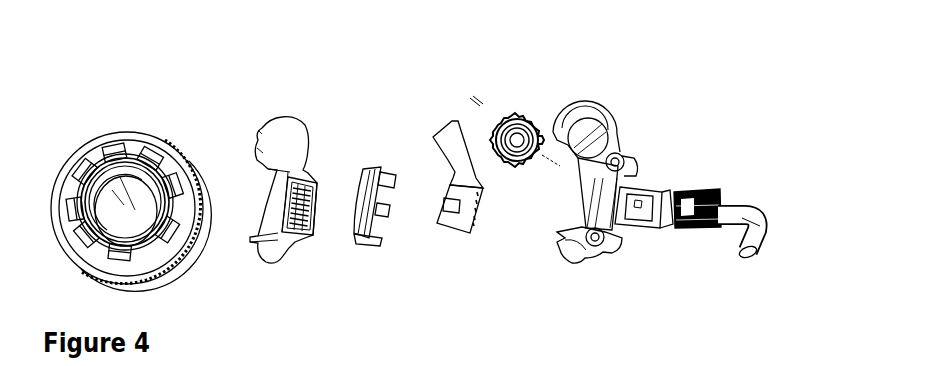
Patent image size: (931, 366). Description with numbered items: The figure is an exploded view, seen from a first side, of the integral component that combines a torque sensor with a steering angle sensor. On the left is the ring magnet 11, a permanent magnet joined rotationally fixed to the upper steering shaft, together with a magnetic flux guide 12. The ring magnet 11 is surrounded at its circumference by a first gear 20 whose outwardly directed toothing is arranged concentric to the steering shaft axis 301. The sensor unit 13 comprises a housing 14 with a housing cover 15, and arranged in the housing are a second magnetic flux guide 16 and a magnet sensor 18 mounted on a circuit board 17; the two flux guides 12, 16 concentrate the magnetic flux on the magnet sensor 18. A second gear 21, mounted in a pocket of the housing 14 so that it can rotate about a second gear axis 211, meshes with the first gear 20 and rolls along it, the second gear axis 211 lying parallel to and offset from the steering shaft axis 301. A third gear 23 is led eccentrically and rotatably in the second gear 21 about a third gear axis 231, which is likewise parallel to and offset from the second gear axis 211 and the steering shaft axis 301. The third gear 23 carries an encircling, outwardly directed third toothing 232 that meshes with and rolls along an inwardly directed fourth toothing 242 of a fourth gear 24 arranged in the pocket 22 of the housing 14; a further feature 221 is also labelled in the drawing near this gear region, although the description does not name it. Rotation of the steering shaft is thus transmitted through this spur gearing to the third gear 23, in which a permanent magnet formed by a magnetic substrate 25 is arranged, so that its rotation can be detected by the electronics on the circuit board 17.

The ring magnet 11 is at (125, 148).
The magnetic flux guide 12 is at (203, 170).
The sensor unit 13 is at (474, 275).
The housing 14 is at (594, 103).
The housing cover 15 is at (276, 133).
The magnetic flux guide 16 is at (353, 234).
The circuit board 17 is at (456, 118).
The magnet sensor 18 is at (447, 213).
The first gear 20 is at (172, 253).
The second gear 21 is at (541, 116).
The pocket 22 is at (608, 118).
The third gear 23 is at (510, 167).
The fourth gear 24 is at (628, 146).
The magnetic substrate 25 is at (518, 113).
The second gear axis 211 is at (487, 108).
The gear face 221 is at (530, 117).
The third gear axis 231 is at (497, 118).
The third toothing 232 is at (525, 167).
The fourth toothing 242 is at (617, 125).
The steering shaft axis 301 is at (58, 148).